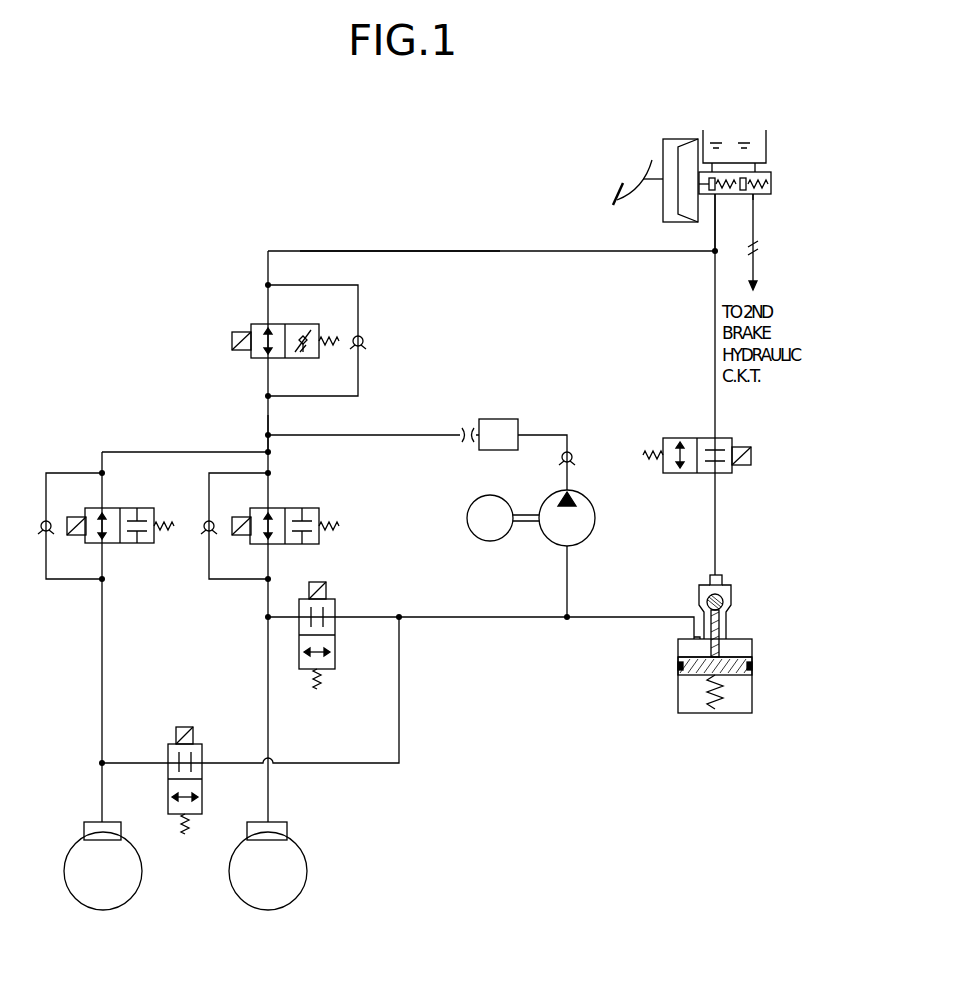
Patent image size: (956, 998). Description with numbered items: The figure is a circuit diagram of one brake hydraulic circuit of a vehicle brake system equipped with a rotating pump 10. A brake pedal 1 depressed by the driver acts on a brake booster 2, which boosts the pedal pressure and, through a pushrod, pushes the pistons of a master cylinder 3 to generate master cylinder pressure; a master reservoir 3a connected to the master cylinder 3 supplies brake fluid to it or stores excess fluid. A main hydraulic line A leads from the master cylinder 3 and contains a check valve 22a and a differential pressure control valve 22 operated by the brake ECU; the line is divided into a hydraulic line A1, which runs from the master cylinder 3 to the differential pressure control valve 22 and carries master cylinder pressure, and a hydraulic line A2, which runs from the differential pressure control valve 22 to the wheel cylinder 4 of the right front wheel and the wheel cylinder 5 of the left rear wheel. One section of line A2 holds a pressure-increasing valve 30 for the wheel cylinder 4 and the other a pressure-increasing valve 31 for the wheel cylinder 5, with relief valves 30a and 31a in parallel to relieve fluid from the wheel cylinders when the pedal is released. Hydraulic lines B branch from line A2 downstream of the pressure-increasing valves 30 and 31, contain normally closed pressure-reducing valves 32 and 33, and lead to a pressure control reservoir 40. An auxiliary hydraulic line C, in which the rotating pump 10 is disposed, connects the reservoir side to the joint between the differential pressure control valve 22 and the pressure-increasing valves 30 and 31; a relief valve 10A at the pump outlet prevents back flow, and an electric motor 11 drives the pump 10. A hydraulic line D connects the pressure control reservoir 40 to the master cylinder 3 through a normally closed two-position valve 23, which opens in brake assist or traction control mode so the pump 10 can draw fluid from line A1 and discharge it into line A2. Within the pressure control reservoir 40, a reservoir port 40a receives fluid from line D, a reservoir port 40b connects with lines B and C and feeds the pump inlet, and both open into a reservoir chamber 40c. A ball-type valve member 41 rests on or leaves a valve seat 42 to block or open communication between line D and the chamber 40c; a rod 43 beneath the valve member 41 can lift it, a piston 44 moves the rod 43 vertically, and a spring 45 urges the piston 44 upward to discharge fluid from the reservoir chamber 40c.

The brake pedal 1 is at (620, 193).
The brake booster 2 is at (663, 150).
The master cylinder 3 is at (771, 190).
The master reservoir 3a is at (767, 152).
The wheel cylinder 4 is at (84, 828).
The wheel cylinder 5 is at (247, 828).
The rotating pump 10 is at (596, 520).
The relief valve 10A is at (576, 452).
The electric motor 11 is at (490, 541).
The differential pressure control valve 22 is at (258, 360).
The check valve 22a is at (367, 341).
The two-position valve 23 is at (688, 438).
The pressure-increasing valve 30 is at (132, 545).
The relief valve 30a is at (38, 535).
The pressure-increasing valve 31 is at (282, 508).
The relief valve 31a is at (201, 522).
The pressure-reducing valve 32 is at (168, 805).
The pressure-reducing valve 33 is at (336, 665).
The pressure control reservoir 40 is at (765, 651).
The reservoir port 40a is at (722, 576).
The reservoir port 40b is at (692, 636).
The reservoir chamber 40c is at (682, 658).
The valve member 41 is at (724, 598).
The valve seat 42 is at (731, 610).
The rod 43 is at (718, 636).
The piston 44 is at (732, 675).
The spring 45 is at (727, 705).
The main hydraulic line A is at (574, 253).
The hydraulic line A1 is at (344, 251).
The hydraulic line A2 is at (262, 432).
The hydraulic line B is at (487, 620).
The hydraulic line C is at (569, 590).
The hydraulic line D is at (713, 338).